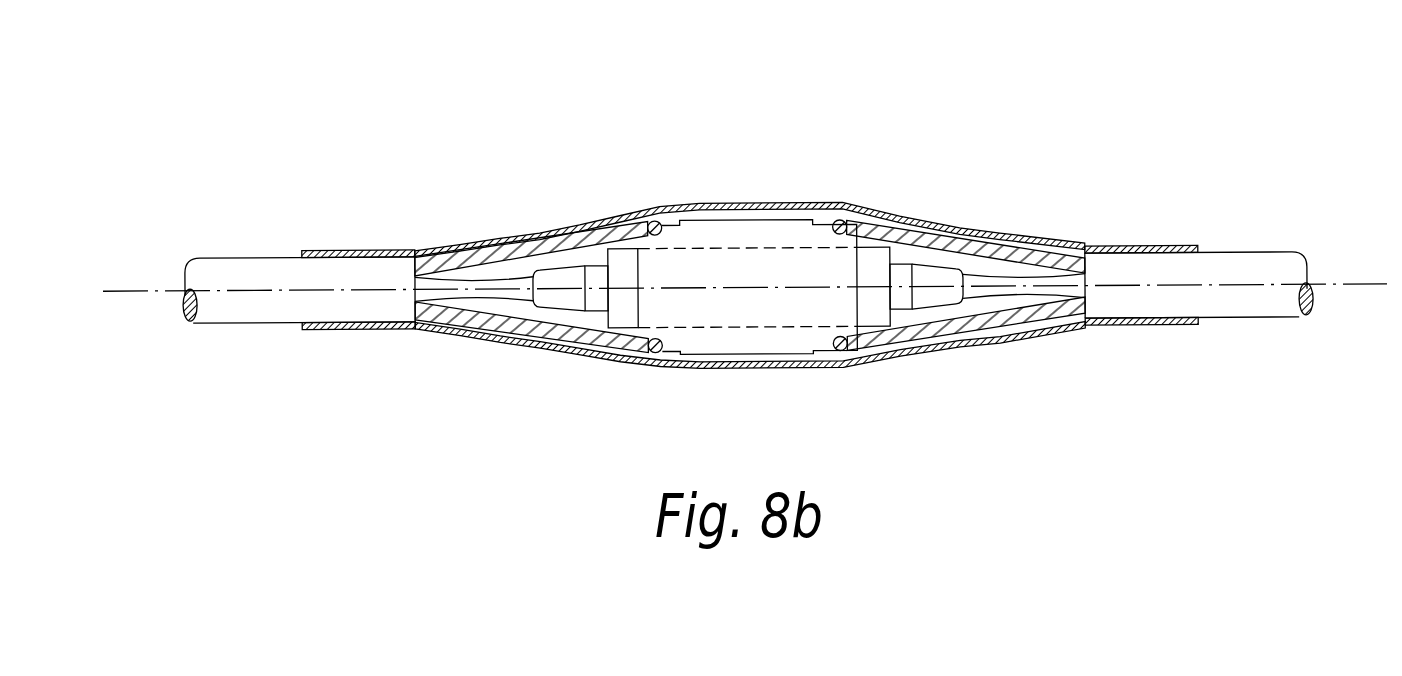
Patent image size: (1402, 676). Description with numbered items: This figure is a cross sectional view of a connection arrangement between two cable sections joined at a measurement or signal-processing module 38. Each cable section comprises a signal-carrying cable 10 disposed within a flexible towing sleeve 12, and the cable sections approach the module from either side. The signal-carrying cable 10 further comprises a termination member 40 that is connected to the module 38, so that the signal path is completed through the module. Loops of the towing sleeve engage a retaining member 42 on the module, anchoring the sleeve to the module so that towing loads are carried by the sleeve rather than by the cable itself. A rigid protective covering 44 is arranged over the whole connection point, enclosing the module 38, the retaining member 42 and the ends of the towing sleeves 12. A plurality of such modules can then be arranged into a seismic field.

The cable 12 is at (223, 180).
The outer protective sleeve 44 is at (453, 245).
The optical fiber 10 is at (477, 287).
The sealing ring 42 is at (657, 221).
The splice housing 38 is at (750, 240).
The ferrule plug 40 is at (932, 280).